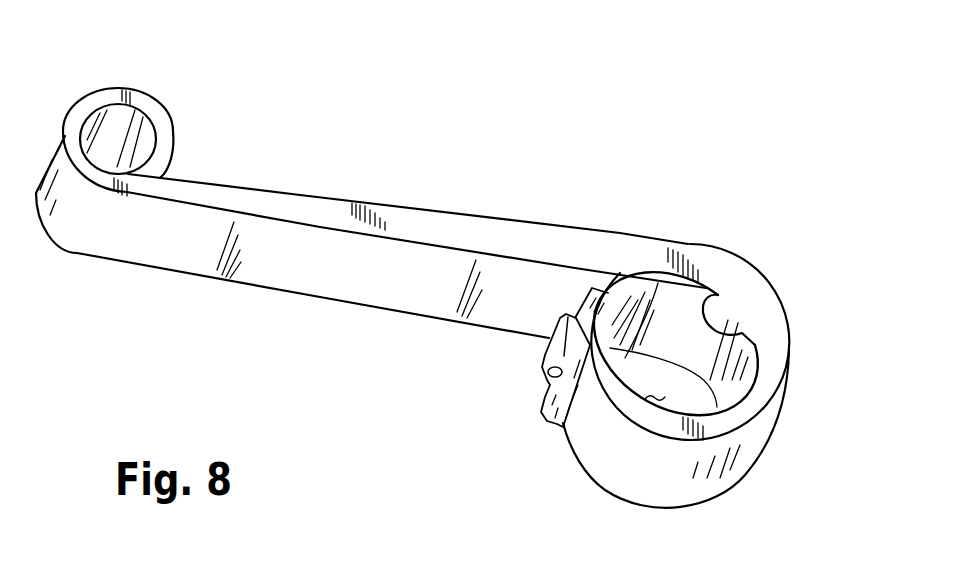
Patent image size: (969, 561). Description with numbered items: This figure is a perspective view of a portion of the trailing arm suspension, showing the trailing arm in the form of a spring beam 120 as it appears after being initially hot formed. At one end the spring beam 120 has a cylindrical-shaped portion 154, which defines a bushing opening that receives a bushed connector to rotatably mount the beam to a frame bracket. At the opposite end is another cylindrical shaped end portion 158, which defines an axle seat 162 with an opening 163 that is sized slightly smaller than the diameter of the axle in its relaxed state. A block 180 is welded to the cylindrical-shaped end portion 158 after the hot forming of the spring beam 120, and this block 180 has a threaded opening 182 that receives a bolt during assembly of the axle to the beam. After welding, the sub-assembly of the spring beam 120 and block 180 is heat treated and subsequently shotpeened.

The spring beam 120 is at (366, 202).
The cylindrical-shaped portion 154 is at (123, 86).
The cylindrical shaped end portion 158 is at (716, 247).
The axle seat 162 is at (707, 300).
The opening 163 is at (656, 385).
The block 180 is at (545, 422).
The threaded opening 182 is at (548, 380).